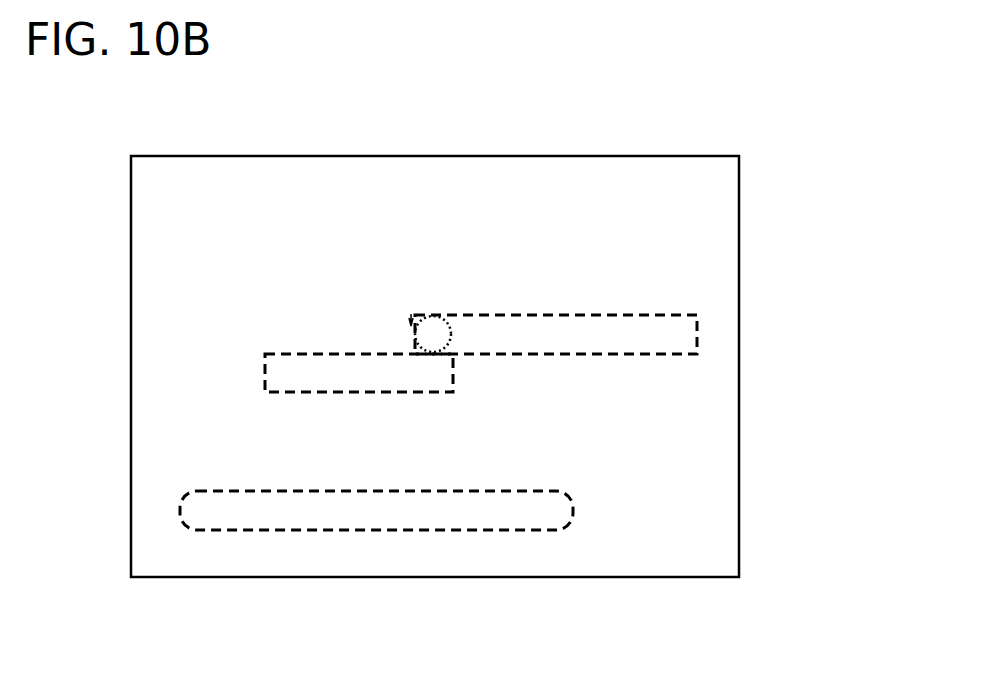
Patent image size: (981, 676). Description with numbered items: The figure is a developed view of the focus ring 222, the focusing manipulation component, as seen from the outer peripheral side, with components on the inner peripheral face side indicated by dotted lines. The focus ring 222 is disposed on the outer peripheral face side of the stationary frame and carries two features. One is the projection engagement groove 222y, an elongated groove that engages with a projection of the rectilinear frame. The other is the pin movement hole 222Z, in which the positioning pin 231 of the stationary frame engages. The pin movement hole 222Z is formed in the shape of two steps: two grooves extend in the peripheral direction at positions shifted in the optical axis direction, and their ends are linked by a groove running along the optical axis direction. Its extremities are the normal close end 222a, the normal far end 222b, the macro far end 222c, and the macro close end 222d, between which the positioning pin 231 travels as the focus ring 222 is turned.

The focus ring 222 is at (698, 197).
The normal close end 222a is at (412, 318).
The normal far end 222b is at (630, 225).
The macro far end 222c is at (433, 385).
The macro close end 222d is at (264, 377).
The pin movement hole 222Z is at (513, 325).
The projection engagement groove 222y is at (238, 513).
The positioning pin 231 is at (431, 334).